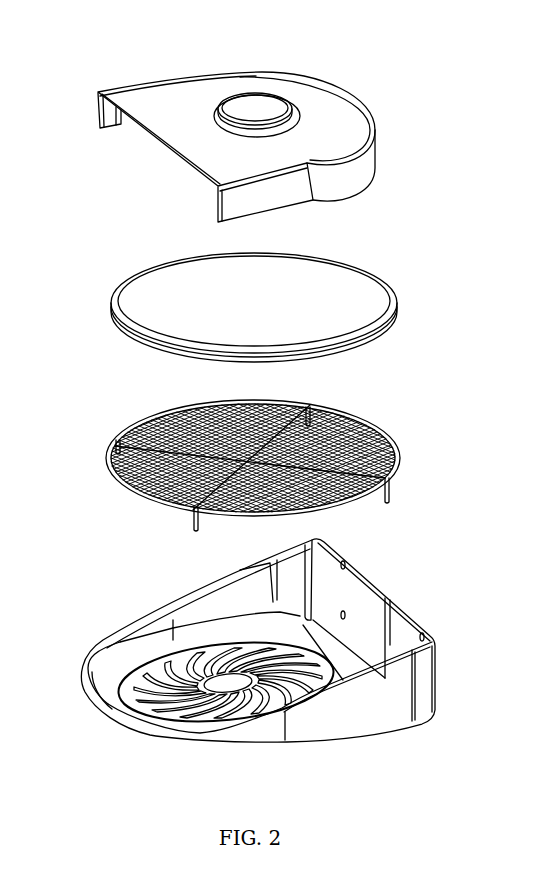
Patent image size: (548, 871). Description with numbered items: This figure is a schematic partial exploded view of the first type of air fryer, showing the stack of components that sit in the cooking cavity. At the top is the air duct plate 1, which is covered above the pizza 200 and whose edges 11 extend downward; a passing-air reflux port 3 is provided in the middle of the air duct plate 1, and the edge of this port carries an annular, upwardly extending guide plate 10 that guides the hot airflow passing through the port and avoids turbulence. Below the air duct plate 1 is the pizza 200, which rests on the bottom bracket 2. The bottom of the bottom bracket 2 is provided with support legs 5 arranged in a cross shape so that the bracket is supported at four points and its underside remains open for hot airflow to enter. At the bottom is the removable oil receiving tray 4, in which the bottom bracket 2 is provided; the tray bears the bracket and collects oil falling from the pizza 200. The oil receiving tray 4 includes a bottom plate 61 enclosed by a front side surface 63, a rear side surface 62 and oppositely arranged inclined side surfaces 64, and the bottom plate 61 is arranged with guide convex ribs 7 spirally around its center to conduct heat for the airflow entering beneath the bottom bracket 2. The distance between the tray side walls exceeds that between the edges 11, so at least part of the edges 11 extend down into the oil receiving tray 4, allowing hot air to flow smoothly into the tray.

The air duct plate 1 is at (256, 118).
The passing-air reflux port 3 is at (257, 108).
The guide plate 10 is at (216, 116).
The edge 11 is at (113, 123).
The pizza 200 is at (372, 302).
The bottom bracket 2 is at (393, 437).
The support leg 5 is at (390, 497).
The oil receiving tray 4 is at (235, 660).
The rear side surface 62 is at (368, 592).
The inclined side surface 64 is at (203, 604).
The bottom plate 61 is at (122, 672).
The front side surface 63 is at (85, 670).
The guide convex rib 7 is at (178, 698).